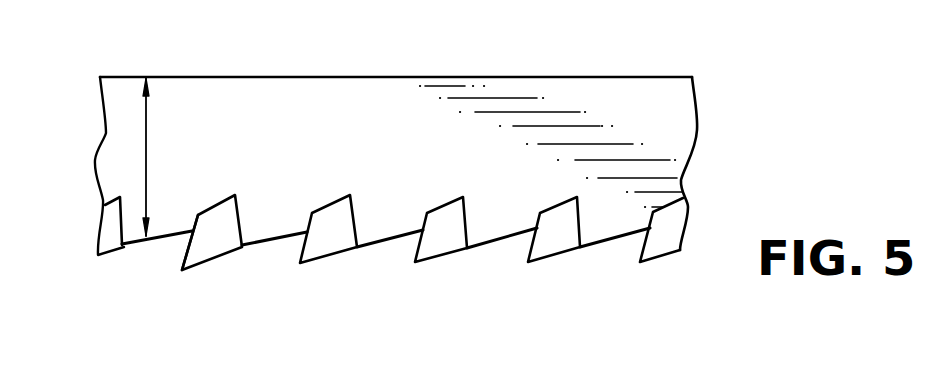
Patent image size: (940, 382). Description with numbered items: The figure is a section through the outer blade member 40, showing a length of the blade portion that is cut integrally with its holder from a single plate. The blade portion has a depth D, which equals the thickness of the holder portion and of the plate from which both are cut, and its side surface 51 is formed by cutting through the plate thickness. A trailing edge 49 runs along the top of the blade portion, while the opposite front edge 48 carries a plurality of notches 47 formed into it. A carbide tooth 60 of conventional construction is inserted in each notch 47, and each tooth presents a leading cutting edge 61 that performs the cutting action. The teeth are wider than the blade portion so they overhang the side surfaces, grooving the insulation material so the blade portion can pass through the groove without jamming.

The outer blade member 40 is at (495, 83).
The notches 47 is at (247, 245).
The front edge 48 is at (383, 240).
The trailing edge 49 is at (193, 77).
The side surface S1 51 is at (383, 115).
The carbide tooth 60 is at (205, 245).
The leading cutting edge 61 is at (182, 268).
The depth of the blade D is at (145, 145).